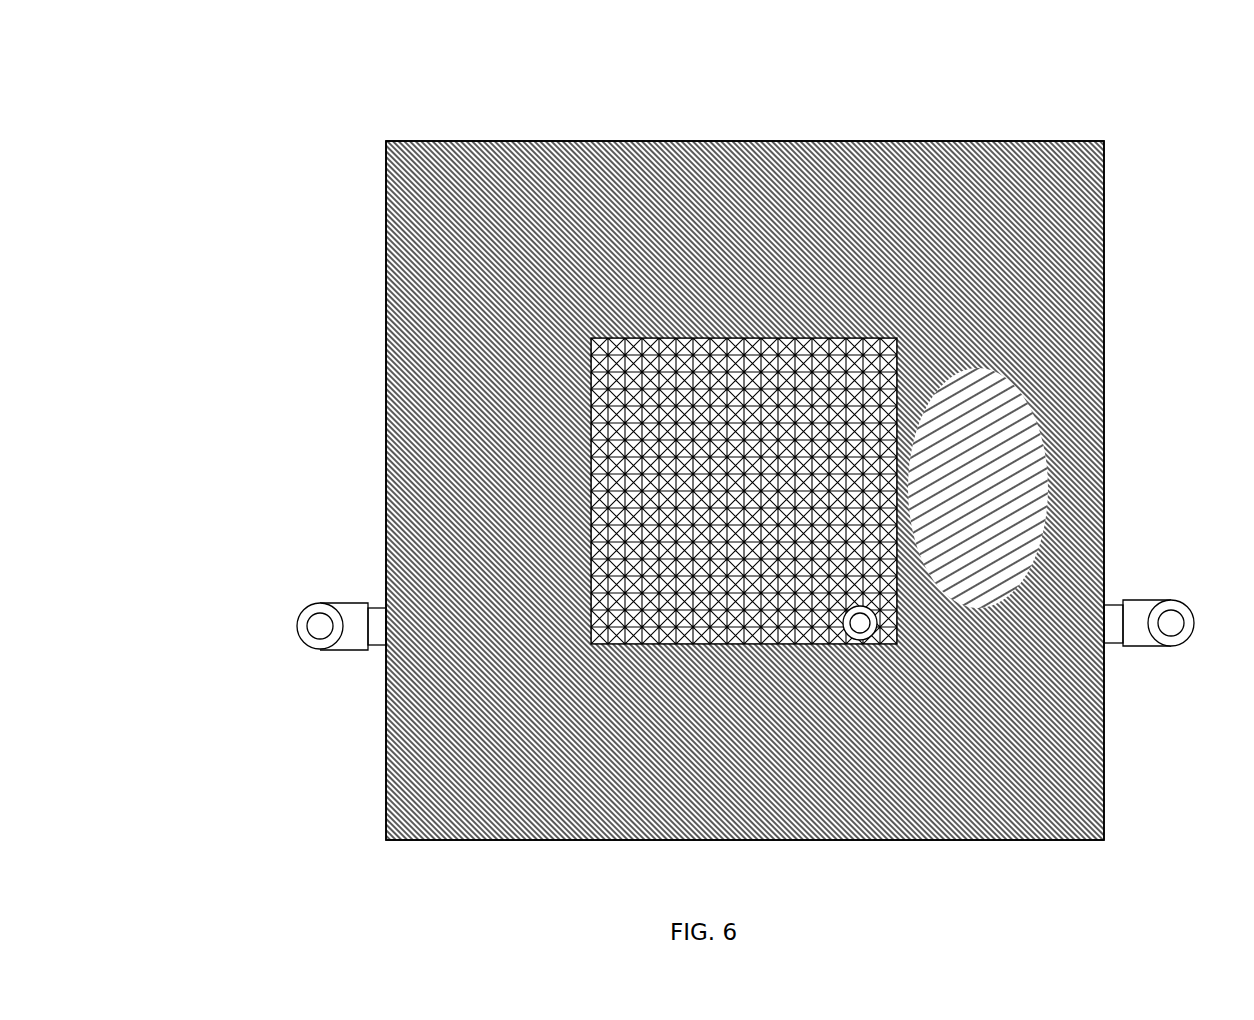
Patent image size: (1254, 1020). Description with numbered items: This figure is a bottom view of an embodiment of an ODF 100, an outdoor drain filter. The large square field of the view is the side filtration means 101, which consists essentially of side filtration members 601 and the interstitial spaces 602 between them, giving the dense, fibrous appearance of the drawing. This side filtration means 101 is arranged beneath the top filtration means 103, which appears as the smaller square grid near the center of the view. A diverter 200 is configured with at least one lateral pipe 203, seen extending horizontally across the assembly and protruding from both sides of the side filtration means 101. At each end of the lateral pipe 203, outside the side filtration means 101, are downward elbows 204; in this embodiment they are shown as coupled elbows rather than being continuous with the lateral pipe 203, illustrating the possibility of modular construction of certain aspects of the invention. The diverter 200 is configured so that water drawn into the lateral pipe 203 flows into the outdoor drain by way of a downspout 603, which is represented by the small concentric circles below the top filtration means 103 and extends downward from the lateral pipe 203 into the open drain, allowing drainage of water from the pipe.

The ODF 100 is at (948, 63).
The side filtration means 101 is at (1092, 178).
The top filtration means 103 is at (665, 375).
The diverter 200 is at (708, 630).
The lateral pipe 203 is at (371, 646).
The downward elbows 204 is at (285, 606).
The side filtration members 601 is at (975, 140).
The interstitial spaces 602 is at (1092, 222).
The downspout 603 is at (852, 632).